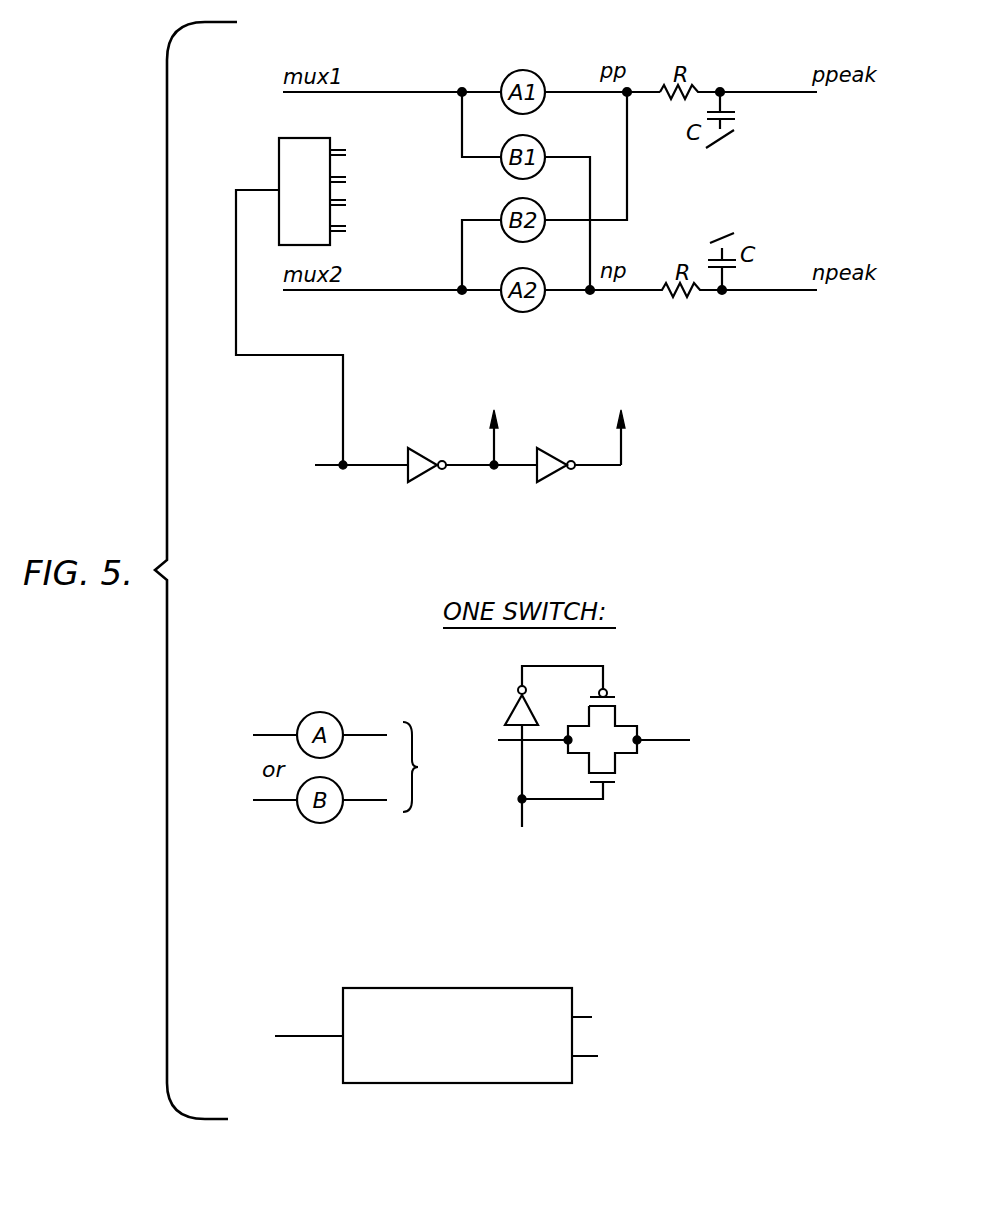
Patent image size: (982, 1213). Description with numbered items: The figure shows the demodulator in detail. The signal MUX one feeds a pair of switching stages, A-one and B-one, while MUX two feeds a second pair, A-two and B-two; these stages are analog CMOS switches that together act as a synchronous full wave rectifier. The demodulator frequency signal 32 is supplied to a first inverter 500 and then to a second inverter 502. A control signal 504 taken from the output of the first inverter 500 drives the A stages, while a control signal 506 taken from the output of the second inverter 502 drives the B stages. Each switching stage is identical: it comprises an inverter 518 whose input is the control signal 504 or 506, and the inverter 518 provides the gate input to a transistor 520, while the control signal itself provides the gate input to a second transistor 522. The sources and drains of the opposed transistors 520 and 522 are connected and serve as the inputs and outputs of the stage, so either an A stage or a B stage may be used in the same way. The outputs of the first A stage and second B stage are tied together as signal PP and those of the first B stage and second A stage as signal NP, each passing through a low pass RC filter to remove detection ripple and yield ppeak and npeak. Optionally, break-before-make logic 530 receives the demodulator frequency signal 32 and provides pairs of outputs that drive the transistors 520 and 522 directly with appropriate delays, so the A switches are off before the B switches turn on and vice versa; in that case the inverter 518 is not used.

The demodulator frequency signal 32 is at (403, 462).
The first inverter 500 is at (425, 478).
The second inverter 502 is at (552, 479).
The control signal 504 is at (494, 448).
The control signal 506 is at (621, 447).
The inverter 518 is at (512, 708).
The transistor 520 is at (618, 714).
The second transistor 522 is at (618, 765).
The break-before-make logic 530 is at (294, 138).